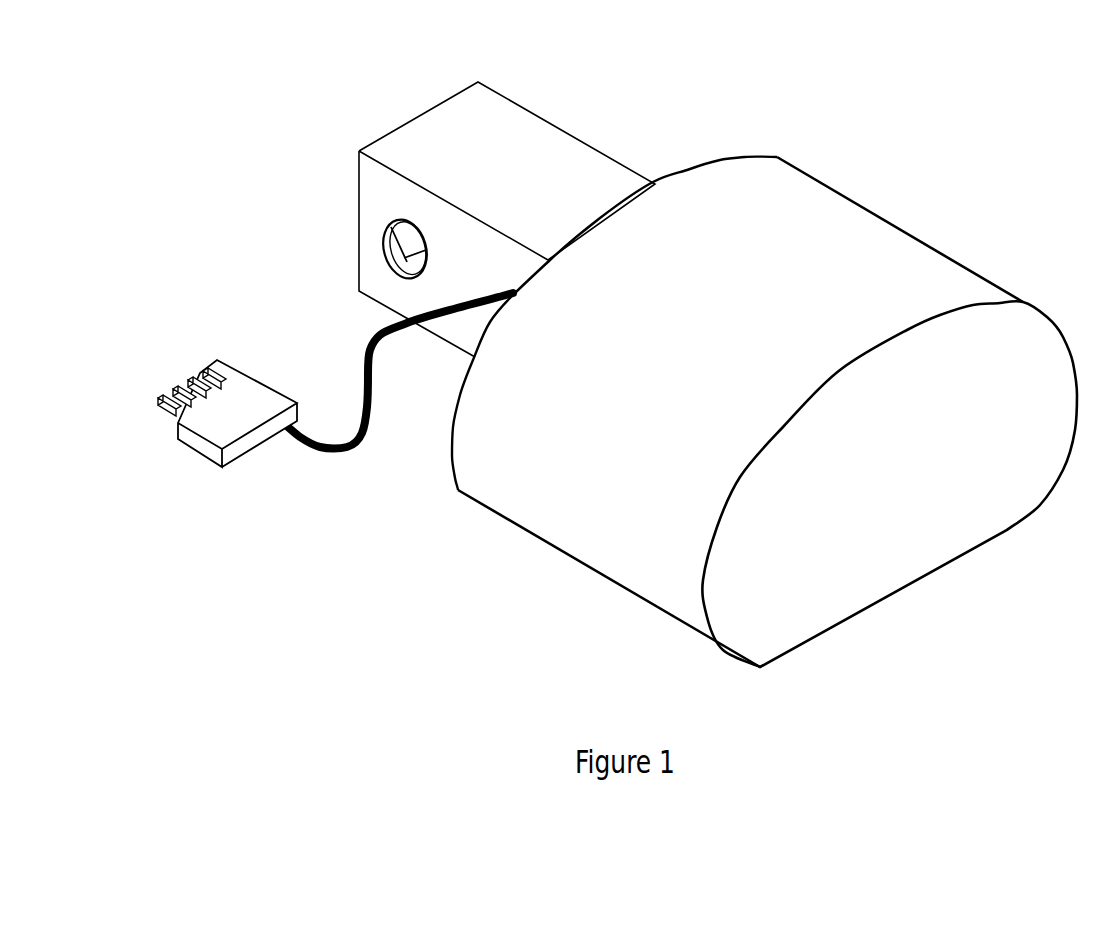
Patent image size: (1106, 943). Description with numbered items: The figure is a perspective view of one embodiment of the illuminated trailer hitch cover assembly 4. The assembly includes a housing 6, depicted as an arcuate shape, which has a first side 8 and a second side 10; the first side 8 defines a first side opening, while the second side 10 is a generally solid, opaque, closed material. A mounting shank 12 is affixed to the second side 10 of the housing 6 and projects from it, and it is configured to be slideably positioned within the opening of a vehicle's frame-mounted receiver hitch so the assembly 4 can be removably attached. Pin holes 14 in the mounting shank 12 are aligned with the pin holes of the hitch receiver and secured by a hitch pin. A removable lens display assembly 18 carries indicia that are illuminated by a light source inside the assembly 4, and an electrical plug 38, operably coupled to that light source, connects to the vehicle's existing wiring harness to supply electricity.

The illuminated trailer hitch cover assembly 4 is at (907, 119).
The housing 6 is at (864, 222).
The first side 8 is at (889, 456).
The second side 10 is at (767, 155).
The mounting shank 12 is at (507, 112).
The pin holes 14 is at (385, 243).
The lens display assembly 18 is at (982, 523).
The electrical plug 38 is at (193, 447).